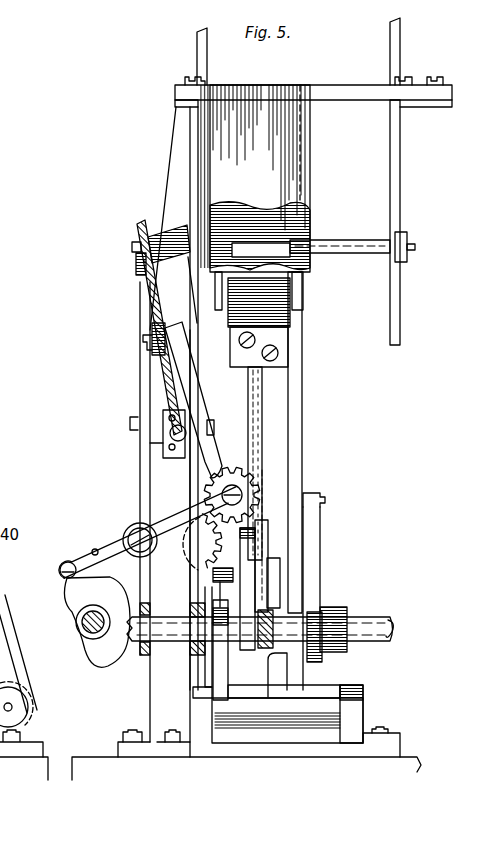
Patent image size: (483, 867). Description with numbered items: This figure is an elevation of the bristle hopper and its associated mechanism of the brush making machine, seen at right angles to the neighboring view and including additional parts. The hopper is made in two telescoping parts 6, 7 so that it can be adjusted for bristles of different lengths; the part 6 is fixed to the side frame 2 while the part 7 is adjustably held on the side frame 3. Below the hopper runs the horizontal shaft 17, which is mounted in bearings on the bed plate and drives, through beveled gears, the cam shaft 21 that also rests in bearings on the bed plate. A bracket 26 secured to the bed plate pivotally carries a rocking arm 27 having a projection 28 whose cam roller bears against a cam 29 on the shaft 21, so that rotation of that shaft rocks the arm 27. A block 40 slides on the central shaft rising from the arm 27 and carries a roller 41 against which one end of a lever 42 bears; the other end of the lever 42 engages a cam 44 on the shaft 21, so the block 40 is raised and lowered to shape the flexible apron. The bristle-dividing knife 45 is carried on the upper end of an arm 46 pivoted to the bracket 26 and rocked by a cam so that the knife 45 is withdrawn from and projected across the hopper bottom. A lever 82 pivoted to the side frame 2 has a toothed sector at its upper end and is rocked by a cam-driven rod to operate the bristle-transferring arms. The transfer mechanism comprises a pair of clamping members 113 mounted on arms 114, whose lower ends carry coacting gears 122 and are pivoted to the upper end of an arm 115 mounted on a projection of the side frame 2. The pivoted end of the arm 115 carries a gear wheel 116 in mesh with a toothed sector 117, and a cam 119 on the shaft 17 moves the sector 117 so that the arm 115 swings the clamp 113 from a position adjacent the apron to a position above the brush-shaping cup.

The side frame 2 is at (175, 170).
The side frame 3 is at (395, 175).
The hopper part 6 is at (212, 130).
The hopper part 7 is at (295, 160).
The horizontal shaft 17 is at (85, 635).
The cam shaft 21 is at (355, 630).
The bracket 26 is at (310, 698).
The rocking arm 27 is at (2, 620).
The projection 28 is at (266, 522).
The cam 29 is at (248, 585).
The block 40 is at (272, 565).
The roller 41 is at (228, 552).
The lever 42 is at (228, 678).
The cam 44 is at (210, 597).
The knife 45 is at (290, 318).
The arm 46 is at (300, 410).
The lever 82 is at (150, 458).
The clamping members 113 is at (170, 235).
The arms 114 is at (160, 288).
The arm 115 is at (190, 405).
The gear wheel 116 is at (236, 466).
The toothed sector 117 is at (160, 522).
The cam 119 is at (80, 603).
The coacting gears 122 is at (152, 335).